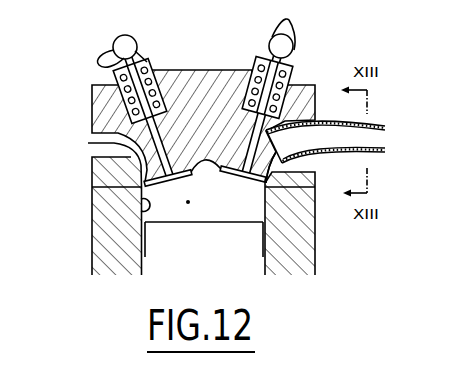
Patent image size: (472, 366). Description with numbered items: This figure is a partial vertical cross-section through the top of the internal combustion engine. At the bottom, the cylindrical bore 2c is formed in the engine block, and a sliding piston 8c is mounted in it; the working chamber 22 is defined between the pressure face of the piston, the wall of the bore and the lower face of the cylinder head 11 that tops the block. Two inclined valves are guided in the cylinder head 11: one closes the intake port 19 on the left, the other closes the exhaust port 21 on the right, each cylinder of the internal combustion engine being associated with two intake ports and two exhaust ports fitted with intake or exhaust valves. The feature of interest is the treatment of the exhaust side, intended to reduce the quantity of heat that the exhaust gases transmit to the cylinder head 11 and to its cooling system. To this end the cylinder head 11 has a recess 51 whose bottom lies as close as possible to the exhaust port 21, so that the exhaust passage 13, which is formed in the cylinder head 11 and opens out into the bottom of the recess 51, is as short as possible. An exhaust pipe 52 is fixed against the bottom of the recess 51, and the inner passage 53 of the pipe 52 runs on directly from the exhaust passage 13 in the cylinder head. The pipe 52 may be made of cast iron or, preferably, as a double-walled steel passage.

The cylinder head 11 is at (180, 102).
The exhaust port 21 is at (239, 152).
The intake port 19 is at (88, 143).
The working chamber 22 is at (204, 200).
The cylindrical bore 2c is at (137, 209).
The sliding piston 8c is at (141, 235).
The recess 51 is at (275, 188).
The exhaust pipe 52 is at (372, 156).
The inner passage 53 is at (373, 128).
The exhaust passage 13 is at (356, 146).